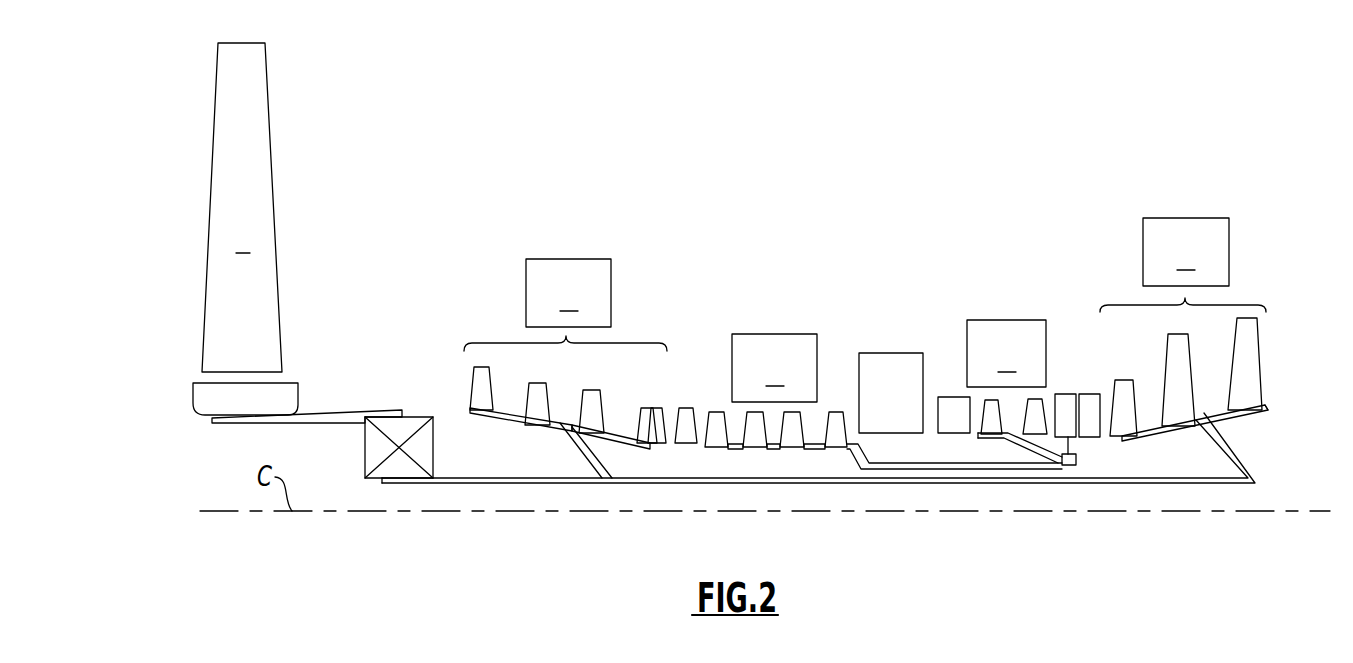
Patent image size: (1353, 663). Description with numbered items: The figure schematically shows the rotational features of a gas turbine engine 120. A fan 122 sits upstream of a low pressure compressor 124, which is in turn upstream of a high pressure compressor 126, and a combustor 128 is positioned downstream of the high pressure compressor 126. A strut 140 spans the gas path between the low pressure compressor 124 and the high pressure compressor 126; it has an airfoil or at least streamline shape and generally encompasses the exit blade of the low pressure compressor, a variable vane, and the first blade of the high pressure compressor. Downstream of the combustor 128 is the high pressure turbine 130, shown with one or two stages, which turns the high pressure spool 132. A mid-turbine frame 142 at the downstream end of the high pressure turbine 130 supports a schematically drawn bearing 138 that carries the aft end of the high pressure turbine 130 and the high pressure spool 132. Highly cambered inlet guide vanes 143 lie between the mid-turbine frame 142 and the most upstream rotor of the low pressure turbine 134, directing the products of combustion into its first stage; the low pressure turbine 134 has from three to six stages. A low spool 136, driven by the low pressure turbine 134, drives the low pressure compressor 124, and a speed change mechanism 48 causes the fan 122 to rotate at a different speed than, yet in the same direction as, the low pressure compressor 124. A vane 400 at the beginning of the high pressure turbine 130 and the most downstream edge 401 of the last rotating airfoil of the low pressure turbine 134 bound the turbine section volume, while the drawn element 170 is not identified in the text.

The engine 120 is at (150, 168).
The fan 122 is at (217, 102).
The speed change mechanism 48 is at (422, 447).
The low pressure compressor 124 is at (625, 342).
The high pressure compressor 126 is at (719, 382).
The combustor 128 is at (884, 366).
The high pressure turbine 130 is at (980, 325).
The high pressure spool 132 is at (980, 463).
The low pressure turbine 134 is at (1245, 300).
The low spool 136 is at (1207, 485).
The bearing 138 is at (1072, 465).
The strut 140 is at (687, 412).
The mid-turbine frame 142 is at (1065, 402).
The inlet guide vanes 143 is at (1088, 430).
The turbine vane 170 is at (957, 405).
The vane 400 is at (940, 397).
The most downstream edge 401 is at (1270, 411).